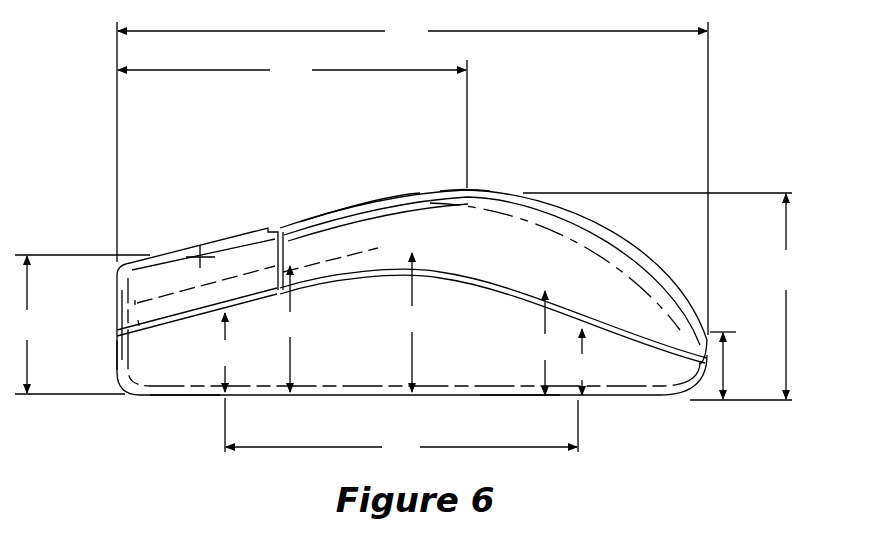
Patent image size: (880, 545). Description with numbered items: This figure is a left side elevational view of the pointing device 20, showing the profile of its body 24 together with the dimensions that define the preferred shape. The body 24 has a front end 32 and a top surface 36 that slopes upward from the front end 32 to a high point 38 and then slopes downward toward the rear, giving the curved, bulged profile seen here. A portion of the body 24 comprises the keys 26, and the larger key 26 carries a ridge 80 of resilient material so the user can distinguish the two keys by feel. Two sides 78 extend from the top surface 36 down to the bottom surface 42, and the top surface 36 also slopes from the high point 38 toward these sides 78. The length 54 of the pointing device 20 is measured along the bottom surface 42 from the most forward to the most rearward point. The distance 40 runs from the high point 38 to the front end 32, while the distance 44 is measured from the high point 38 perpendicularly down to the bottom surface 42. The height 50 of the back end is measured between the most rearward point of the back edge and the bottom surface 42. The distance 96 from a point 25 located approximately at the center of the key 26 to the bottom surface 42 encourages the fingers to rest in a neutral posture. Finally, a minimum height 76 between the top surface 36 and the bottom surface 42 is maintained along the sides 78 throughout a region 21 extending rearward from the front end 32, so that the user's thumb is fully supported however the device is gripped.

The pointing device 20 is at (97, 210).
The region 21 is at (401, 431).
The body 24 is at (514, 376).
The point 25 is at (205, 278).
The keys 26 is at (155, 282).
The front end 32 is at (103, 345).
The top surface 36 is at (330, 243).
The high point 38 is at (463, 188).
The distance from the high point to the front end 40 is at (292, 122).
The bottom surface 42 is at (185, 395).
The distance from the high point to the bottom surface 44 is at (657, 296).
The height of the back end 50 is at (726, 368).
The length 54 is at (412, 176).
The minimum height 76 is at (403, 324).
The sides 78 is at (479, 354).
The ridge 80 is at (225, 243).
The distance from the key center point to the bottom surface 96 is at (79, 324).